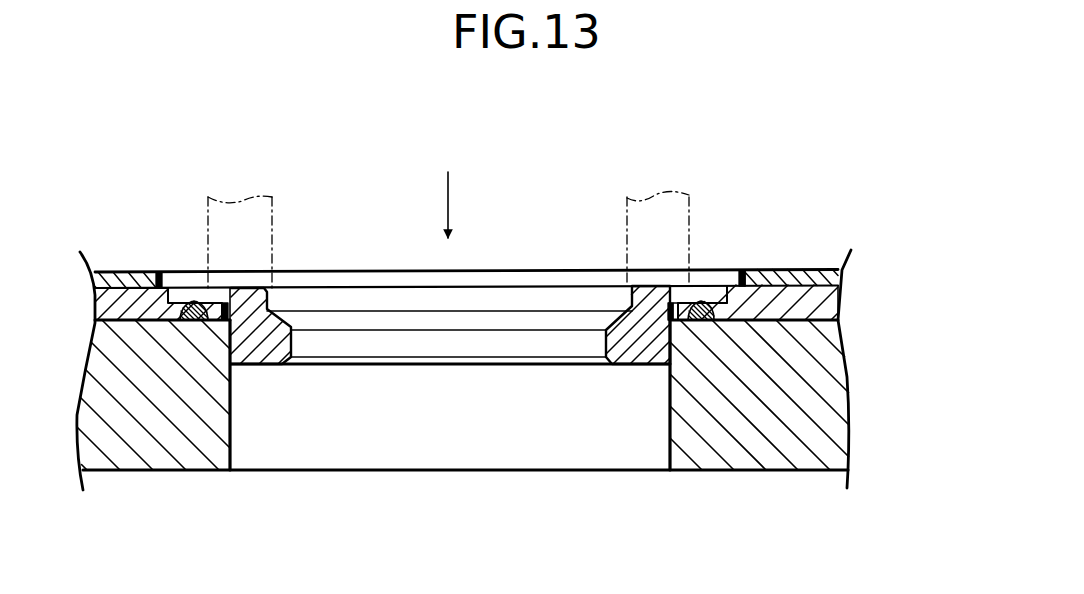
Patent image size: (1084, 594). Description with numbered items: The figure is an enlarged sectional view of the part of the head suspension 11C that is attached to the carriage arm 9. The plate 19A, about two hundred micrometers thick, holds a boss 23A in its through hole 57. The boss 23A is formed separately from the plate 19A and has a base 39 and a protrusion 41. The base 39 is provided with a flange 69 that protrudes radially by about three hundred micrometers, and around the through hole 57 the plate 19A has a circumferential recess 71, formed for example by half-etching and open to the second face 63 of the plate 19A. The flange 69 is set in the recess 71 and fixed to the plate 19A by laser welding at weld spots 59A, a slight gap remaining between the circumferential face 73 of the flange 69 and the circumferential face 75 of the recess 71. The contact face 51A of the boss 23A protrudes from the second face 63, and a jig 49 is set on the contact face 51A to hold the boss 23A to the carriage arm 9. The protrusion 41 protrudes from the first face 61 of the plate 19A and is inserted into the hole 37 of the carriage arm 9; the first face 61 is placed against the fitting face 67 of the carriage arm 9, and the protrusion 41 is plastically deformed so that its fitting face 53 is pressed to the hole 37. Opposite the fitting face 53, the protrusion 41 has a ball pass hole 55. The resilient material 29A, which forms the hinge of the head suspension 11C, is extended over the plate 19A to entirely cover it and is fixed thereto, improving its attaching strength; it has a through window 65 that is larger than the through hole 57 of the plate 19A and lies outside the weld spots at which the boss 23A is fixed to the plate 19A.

The carriage arm 9 is at (795, 453).
The head suspension 11C is at (786, 266).
The plate 19A is at (843, 289).
The boss 23A is at (503, 270).
The resilient material 29A is at (833, 266).
The hole 37 is at (668, 458).
The base 39 is at (630, 300).
The protrusion 41 is at (612, 362).
The jig 49 is at (682, 186).
The contact face 51A is at (655, 286).
The fitting face 53 is at (668, 355).
The ball pass hole 55 is at (597, 362).
The through hole 57 is at (650, 330).
The weld spots 59A is at (700, 325).
The first face 61 is at (825, 340).
The second face 63 is at (822, 272).
The window 65 is at (163, 270).
The fitting face 67 is at (835, 312).
The flange 69 is at (699, 300).
The recess 71 is at (714, 290).
The circumferential face 73 is at (752, 287).
The circumferential face 75 is at (733, 286).